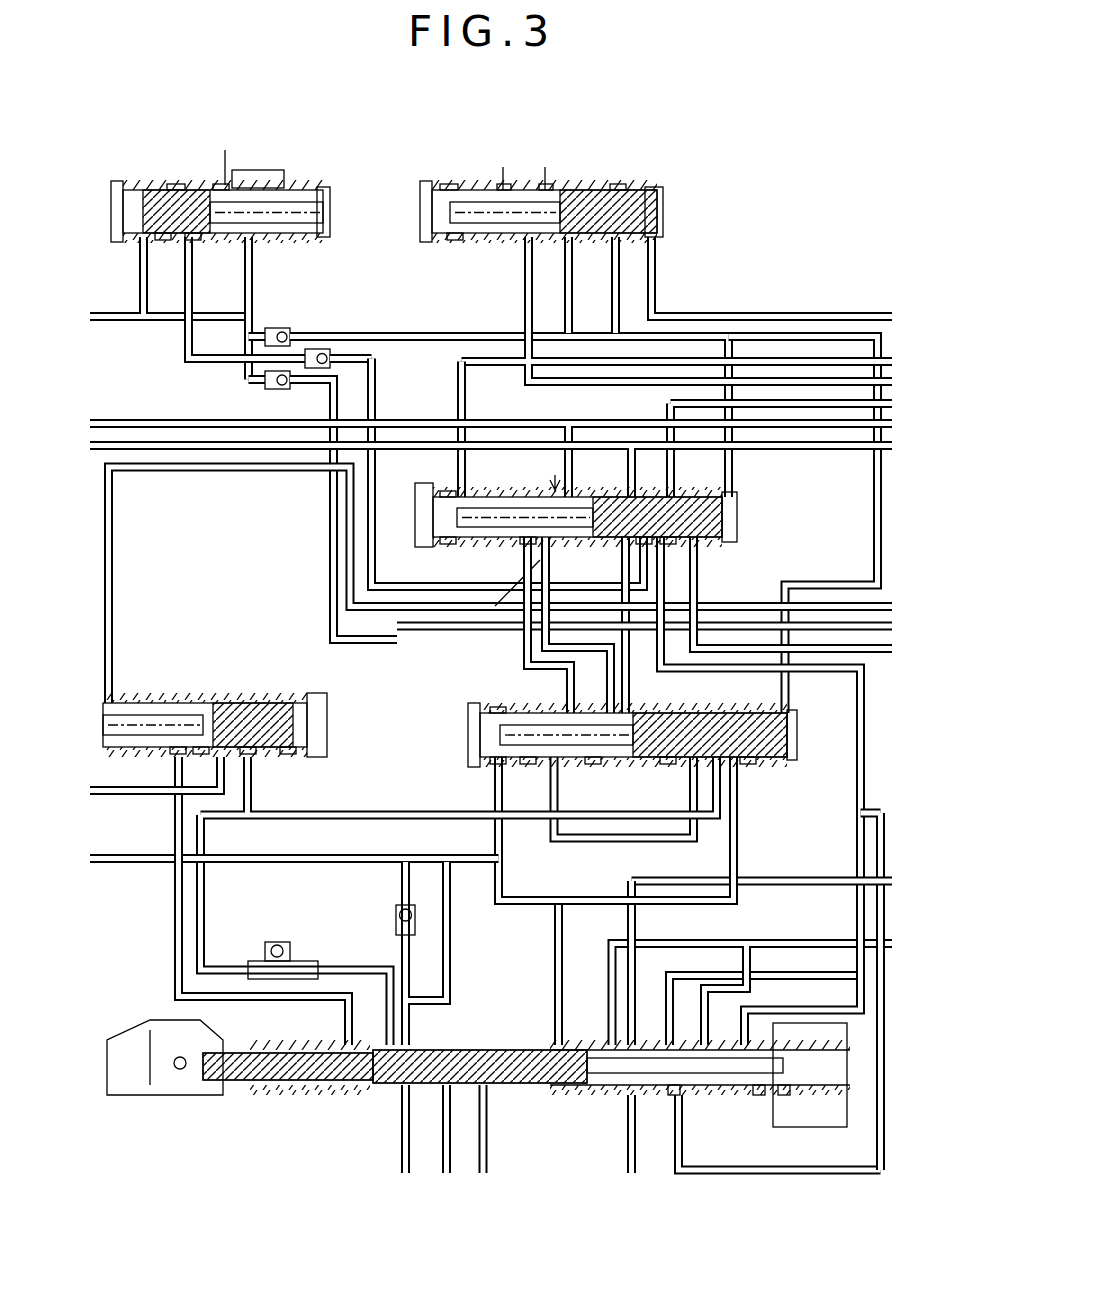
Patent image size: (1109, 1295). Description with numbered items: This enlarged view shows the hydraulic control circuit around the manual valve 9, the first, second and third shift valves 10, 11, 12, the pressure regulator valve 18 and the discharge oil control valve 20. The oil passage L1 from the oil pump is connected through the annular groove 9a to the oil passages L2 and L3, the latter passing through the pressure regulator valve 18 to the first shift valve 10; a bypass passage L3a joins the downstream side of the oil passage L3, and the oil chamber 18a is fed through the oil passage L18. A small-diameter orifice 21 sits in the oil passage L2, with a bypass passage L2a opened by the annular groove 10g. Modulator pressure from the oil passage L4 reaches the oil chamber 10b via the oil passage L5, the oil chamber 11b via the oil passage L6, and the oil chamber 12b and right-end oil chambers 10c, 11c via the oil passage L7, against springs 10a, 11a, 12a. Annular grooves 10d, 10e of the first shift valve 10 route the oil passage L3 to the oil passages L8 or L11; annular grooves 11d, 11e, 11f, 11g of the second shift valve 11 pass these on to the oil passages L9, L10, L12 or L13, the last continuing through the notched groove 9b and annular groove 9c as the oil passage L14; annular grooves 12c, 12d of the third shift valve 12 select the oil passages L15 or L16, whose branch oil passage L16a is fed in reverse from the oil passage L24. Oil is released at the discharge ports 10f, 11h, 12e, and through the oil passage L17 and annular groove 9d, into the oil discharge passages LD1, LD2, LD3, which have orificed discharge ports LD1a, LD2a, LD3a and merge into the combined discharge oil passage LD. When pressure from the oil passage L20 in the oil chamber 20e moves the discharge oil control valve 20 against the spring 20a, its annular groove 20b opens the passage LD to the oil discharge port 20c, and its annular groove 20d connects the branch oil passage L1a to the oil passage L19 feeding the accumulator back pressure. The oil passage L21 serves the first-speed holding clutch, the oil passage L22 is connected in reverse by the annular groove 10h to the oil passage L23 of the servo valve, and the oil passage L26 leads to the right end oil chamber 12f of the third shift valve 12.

The manual valve 9 is at (473, 1088).
The annular groove 9a is at (446, 1098).
The notched groove 9b is at (756, 1098).
The annular groove 9c is at (782, 1098).
The annular groove 9d is at (672, 1098).
The first shift valve 10 is at (646, 760).
The spring 10a is at (498, 710).
The oil chamber 10b is at (498, 766).
The oil chamber 10c is at (795, 760).
The annular groove 10d is at (592, 766).
The annular groove 10e is at (621, 797).
The oil discharge port 10f is at (545, 766).
The annular groove 10g is at (748, 766).
The annular groove 10h is at (668, 766).
The second shift valve 11 is at (596, 524).
The spring 11a is at (455, 495).
The oil chamber 11b is at (448, 545).
The oil chamber 11c is at (740, 517).
The annular groove 11d is at (668, 545).
The annular groove 11e is at (650, 545).
The annular groove 11f is at (496, 589).
The annular groove 11g is at (528, 545).
The oil discharge port 11h is at (543, 472).
The third shift valve 12 is at (559, 210).
The spring 12a is at (460, 182).
The oil chamber 12b is at (618, 184).
The annular groove 12c is at (560, 245).
The annular groove 12d is at (513, 184).
The oil discharge port 12e is at (455, 242).
The right end oil chamber 12f is at (663, 230).
The pressure regulator valve 18 is at (218, 690).
The oil chamber 18a is at (108, 760).
The discharge oil control valve 20 is at (241, 212).
The spring 20a is at (330, 190).
The annular groove 20b is at (160, 240).
The oil discharge port 20c is at (218, 184).
The annular groove 20d is at (195, 240).
The oil chamber 20e is at (170, 184).
The small-diameter orifice 21 is at (450, 900).
The first oil passage L1 is at (484, 1113).
The branch oil passage L1a is at (252, 290).
The second oil passage L2 is at (228, 862).
The bypass passage L2a is at (540, 905).
The third oil passage L3 is at (278, 822).
The bypass passage L3a is at (178, 918).
The fourth oil passage L4 is at (180, 450).
The fifth oil passage L5 is at (825, 880).
The sixth oil passage L6 is at (464, 398).
The seventh oil passage L7 is at (838, 338).
The eighth oil passage L8 is at (700, 650).
The ninth oil passage L9 is at (660, 468).
The tenth oil passage L10 is at (772, 400).
The eleventh oil passage L11 is at (542, 645).
The twelfth oil passage L12 is at (380, 420).
The thirteenth oil passage L13 is at (524, 665).
The fourteenth oil passage L14 is at (526, 335).
The fifteenth oil passage L15 is at (547, 168).
The sixteenth oil passage L16 is at (503, 168).
The branch oil passage L16a is at (812, 1172).
The seventeenth oil passage L17 is at (878, 652).
The eighteenth oil passage L18 is at (115, 568).
The nineteenth oil passage L19 is at (228, 152).
The twentieth oil passage L20 is at (103, 330).
The twenty-first oil passage L21 is at (628, 1125).
The twenty-second oil passage L22 is at (556, 1000).
The twenty-third oil passage L23 is at (880, 812).
The twenty-fourth oil passage L24 is at (866, 1012).
The twenty-sixth oil passage L26 is at (688, 318).
The combined discharge oil passage LD is at (232, 366).
The first oil discharge passage LD1 is at (437, 632).
The oil discharge port LD1a is at (386, 645).
The second oil discharge passage LD2 is at (368, 565).
The oil discharge port LD2a is at (628, 600).
The third oil discharge passage LD3 is at (325, 338).
The oil discharge port LD3a is at (374, 372).